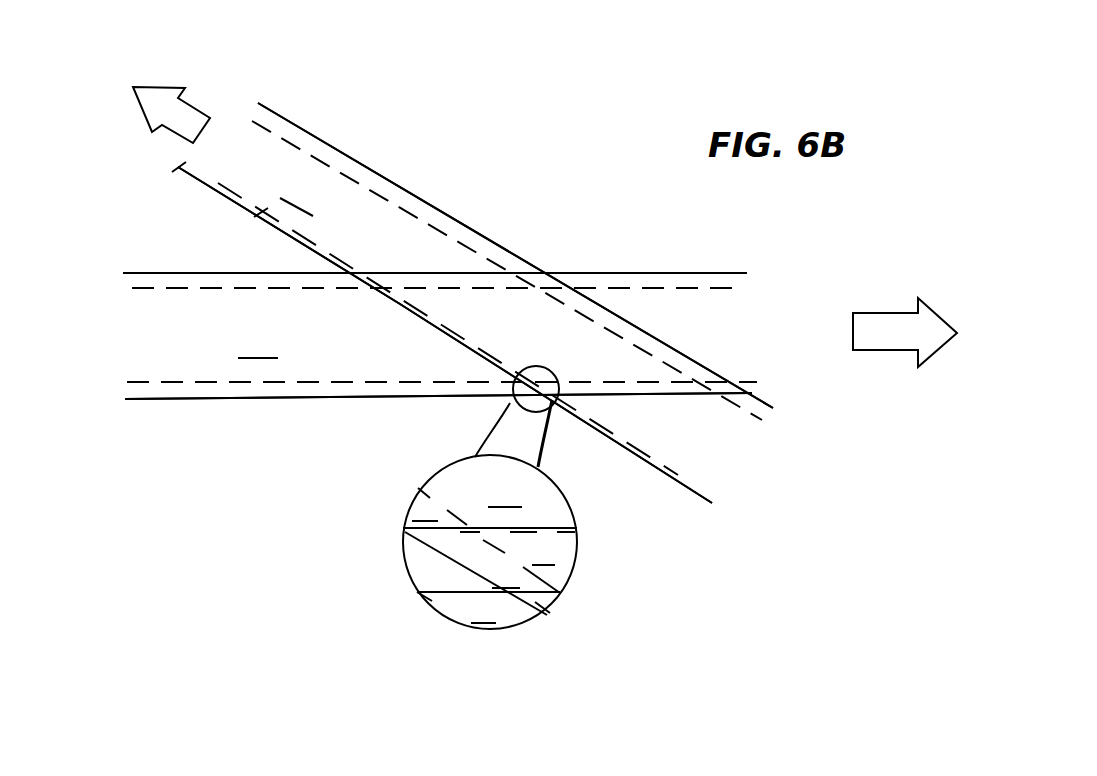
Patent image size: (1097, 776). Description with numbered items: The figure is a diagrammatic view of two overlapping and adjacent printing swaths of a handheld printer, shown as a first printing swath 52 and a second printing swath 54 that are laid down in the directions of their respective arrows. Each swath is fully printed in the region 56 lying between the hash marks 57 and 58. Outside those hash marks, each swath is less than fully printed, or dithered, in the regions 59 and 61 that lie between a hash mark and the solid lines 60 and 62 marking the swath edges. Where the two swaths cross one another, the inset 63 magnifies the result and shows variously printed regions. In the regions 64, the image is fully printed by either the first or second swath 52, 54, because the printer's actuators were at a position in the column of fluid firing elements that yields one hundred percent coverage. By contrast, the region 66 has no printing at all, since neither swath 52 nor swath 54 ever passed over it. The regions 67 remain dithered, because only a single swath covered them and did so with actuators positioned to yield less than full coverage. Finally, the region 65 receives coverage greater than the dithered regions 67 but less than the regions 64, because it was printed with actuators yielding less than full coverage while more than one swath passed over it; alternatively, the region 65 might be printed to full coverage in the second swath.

The printing swath 52 is at (851, 343).
The printing swath 54 is at (188, 103).
The fully printed region 56 is at (280, 269).
The hash mark 57 is at (327, 162).
The hash mark 58 is at (258, 212).
The dithered region 59 is at (192, 178).
The solid line 60 is at (302, 245).
The dithered region 61 is at (270, 113).
The solid line 62 is at (422, 198).
The inset 63 is at (582, 558).
The fully printed region 64 is at (490, 523).
The intermediate coverage region 65 is at (476, 573).
The unprinted region 66 is at (488, 608).
The dithered region 67 is at (420, 572).